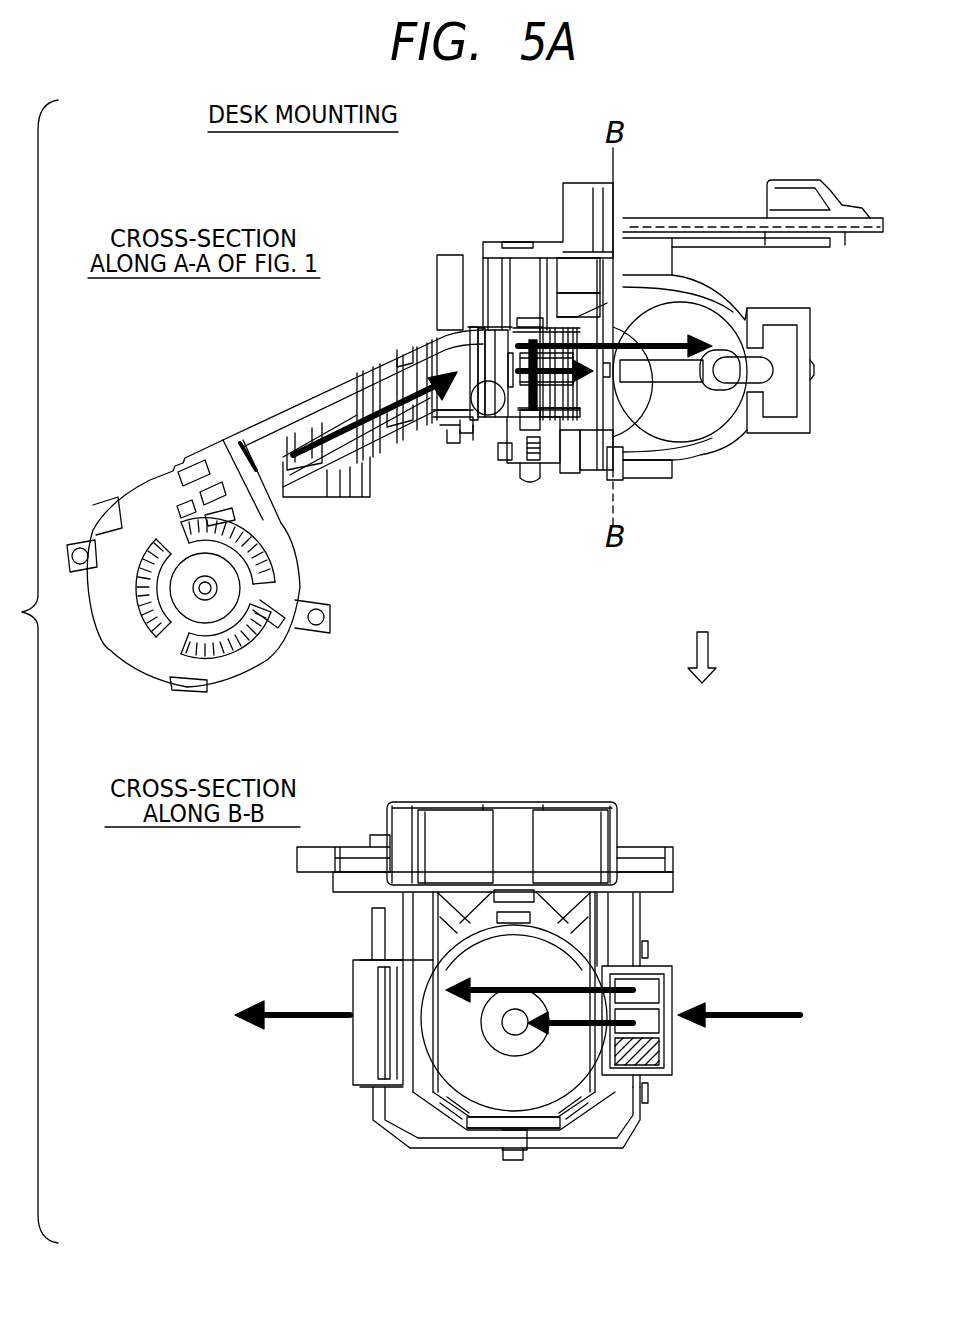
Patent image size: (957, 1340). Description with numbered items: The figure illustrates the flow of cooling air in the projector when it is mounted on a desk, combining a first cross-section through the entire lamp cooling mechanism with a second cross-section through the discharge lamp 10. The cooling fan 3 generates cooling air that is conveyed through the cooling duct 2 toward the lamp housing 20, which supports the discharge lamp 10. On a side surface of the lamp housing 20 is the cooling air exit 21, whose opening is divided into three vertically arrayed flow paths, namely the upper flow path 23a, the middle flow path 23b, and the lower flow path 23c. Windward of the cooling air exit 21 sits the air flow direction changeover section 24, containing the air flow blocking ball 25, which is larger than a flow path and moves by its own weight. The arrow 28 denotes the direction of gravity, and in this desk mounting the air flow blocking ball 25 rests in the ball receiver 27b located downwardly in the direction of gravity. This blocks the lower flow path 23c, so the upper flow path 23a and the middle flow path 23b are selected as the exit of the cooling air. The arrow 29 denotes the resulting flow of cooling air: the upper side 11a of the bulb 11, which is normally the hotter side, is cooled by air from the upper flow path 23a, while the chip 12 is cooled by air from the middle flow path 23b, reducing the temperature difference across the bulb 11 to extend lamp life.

The cooling duct 2 is at (150, 500).
The cooling fan 3 is at (313, 412).
The discharge lamp 10 is at (701, 447).
The lamp bulb 11 is at (503, 1052).
The upper side of the bulb 11a is at (510, 980).
The lamp chip 12 is at (515, 1035).
The lamp housing 20 is at (646, 226).
The cooling air exit 21 is at (490, 328).
The upper flow path 23a is at (648, 992).
The middle flow path 23b is at (650, 1024).
The lower flow path 23c is at (547, 400).
The air flow direction changeover section 24 is at (530, 325).
The air flow blocking ball 25 is at (485, 398).
The ball receiver 27b is at (486, 418).
The direction of gravity 28 is at (721, 657).
The flow of the cooling air 29 is at (383, 397).